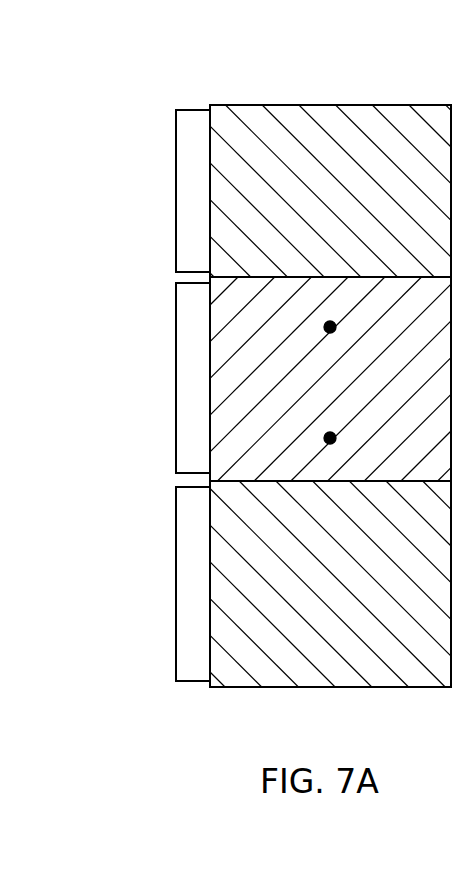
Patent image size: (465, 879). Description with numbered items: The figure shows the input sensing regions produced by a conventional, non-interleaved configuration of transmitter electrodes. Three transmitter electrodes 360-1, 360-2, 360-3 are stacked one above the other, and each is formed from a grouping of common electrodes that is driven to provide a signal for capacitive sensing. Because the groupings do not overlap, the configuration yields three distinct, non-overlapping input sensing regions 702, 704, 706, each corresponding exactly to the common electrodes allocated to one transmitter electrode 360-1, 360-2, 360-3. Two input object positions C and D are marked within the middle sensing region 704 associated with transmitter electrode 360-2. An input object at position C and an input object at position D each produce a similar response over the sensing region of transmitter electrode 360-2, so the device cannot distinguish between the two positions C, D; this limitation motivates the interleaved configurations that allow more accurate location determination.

The input sensing region 702 is at (398, 114).
The input sensing region 704 is at (440, 318).
The input sensing region 706 is at (415, 668).
The transmitter electrode 360-1 is at (176, 191).
The transmitter electrode 360-2 is at (176, 378).
The transmitter electrode 360-3 is at (176, 583).
The position C is at (330, 322).
The position D is at (326, 437).